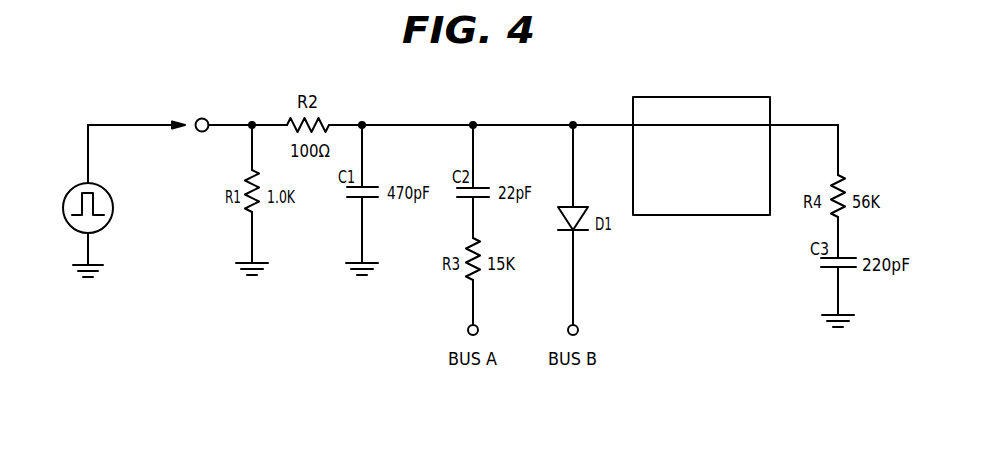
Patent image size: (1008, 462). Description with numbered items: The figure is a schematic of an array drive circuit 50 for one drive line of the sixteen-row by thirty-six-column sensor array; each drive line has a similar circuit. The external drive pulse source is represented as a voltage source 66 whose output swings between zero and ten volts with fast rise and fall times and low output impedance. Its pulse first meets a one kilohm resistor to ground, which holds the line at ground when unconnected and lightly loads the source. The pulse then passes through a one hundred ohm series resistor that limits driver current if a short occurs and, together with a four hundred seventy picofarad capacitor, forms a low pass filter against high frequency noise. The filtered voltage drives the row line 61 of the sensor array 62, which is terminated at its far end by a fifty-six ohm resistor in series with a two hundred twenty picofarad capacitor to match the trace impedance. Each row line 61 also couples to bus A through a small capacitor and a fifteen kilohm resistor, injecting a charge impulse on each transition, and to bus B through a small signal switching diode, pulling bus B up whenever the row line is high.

The drive circuit input 50 is at (156, 84).
The voltage source 66 is at (78, 182).
The row line 61 is at (701, 113).
The array 62 is at (701, 178).